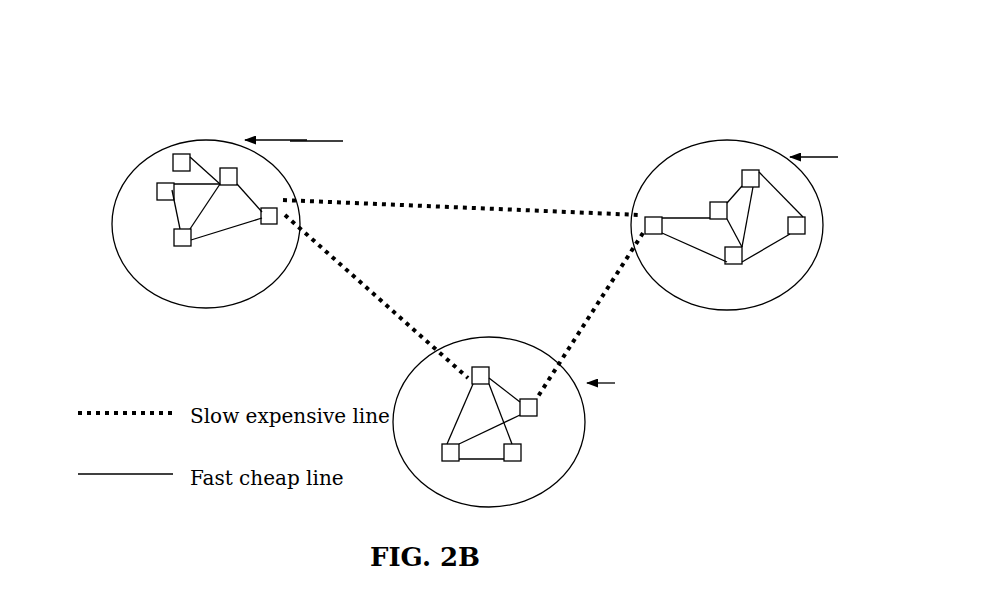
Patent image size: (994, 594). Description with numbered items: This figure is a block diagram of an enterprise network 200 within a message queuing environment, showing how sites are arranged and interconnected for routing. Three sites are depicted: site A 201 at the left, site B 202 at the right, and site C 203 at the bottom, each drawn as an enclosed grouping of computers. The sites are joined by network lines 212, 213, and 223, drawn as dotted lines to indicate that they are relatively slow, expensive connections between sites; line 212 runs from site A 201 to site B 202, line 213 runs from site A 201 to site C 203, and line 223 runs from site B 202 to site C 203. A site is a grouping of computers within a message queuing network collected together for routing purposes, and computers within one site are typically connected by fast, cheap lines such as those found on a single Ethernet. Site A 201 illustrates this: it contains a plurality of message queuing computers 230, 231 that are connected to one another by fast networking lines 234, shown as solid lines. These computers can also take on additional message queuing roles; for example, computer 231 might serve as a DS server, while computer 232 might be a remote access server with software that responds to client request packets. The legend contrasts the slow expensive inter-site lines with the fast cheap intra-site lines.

The enterprise network 200 is at (422, 107).
The site A 201 is at (150, 145).
The site B 202 is at (672, 148).
The site C 203 is at (403, 382).
The network line 212 is at (461, 173).
The network line 213 is at (367, 296).
The network line 223 is at (605, 315).
The message queuing computers 230 is at (173, 160).
The computer 231 is at (200, 280).
The computer 232 is at (197, 140).
The fast networking lines 234 is at (210, 200).